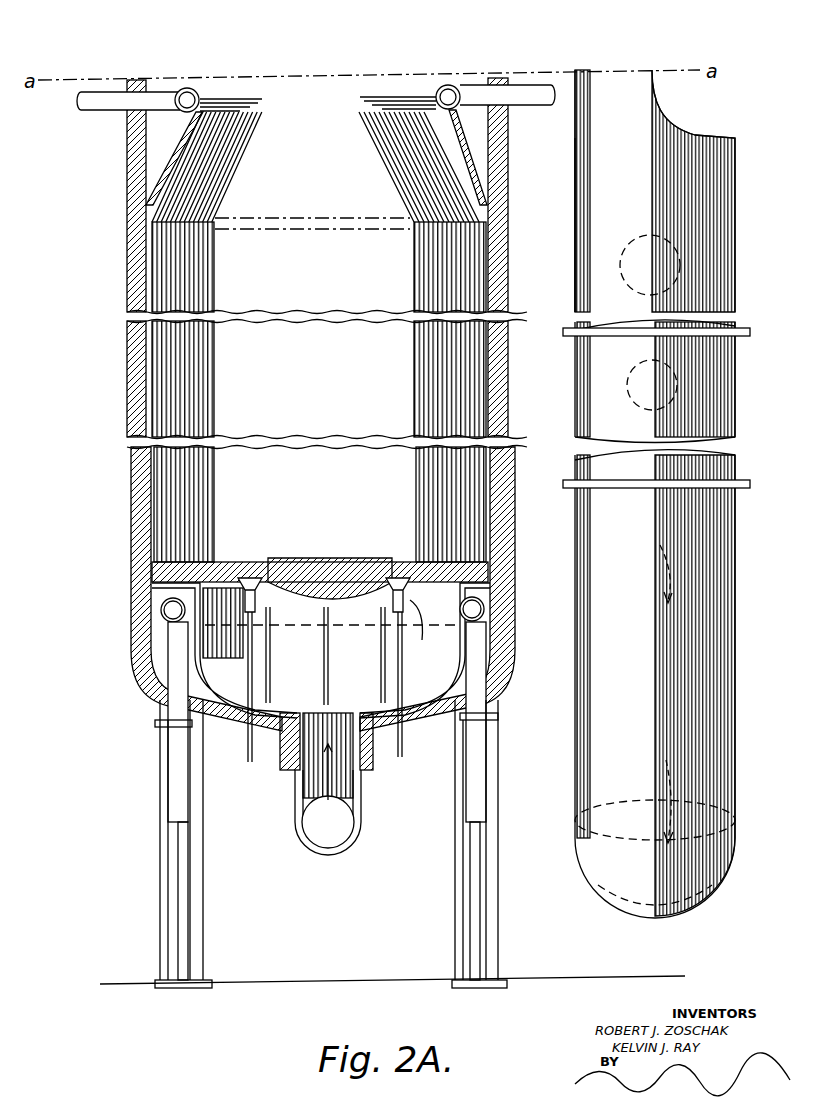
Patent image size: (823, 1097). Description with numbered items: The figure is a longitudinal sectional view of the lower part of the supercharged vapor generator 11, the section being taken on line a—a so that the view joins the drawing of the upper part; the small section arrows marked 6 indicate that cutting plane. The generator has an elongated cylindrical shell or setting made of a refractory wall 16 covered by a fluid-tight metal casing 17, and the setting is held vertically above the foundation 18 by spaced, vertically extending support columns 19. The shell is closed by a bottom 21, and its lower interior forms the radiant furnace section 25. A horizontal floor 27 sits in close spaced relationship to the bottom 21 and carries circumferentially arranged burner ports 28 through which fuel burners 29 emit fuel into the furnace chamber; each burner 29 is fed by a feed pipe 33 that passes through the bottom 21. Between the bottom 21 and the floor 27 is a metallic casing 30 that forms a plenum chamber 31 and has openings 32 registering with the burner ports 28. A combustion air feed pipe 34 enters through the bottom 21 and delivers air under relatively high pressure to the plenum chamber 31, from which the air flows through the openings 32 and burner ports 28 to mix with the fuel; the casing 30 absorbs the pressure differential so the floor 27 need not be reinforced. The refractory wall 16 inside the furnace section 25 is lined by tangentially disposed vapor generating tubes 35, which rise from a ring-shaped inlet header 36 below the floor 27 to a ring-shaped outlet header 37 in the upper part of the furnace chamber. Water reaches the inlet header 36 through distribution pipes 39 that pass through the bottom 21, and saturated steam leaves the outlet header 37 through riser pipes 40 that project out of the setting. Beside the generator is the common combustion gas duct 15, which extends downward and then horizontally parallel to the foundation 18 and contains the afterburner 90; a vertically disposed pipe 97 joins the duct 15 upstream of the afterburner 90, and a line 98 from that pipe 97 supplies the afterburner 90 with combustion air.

The section line 6-6 indicator 6 is at (61, 70).
The supercharged vapor generator 11 is at (108, 296).
The combustion gas duct 15 is at (572, 237).
The refractory wall 16 is at (508, 278).
The fluid-tight metal casing 17 is at (510, 334).
The foundation 18 is at (353, 971).
The support columns 19 is at (158, 882).
The bottom 21 is at (247, 722).
The radiant furnace section 25 is at (312, 297).
The horizontal floor 27 is at (336, 565).
The burner ports 28 is at (263, 578).
The fuel burners 29 is at (250, 578).
The metallic casing 30 is at (470, 648).
The plenum chamber 31 is at (330, 633).
The openings 32 is at (422, 631).
The feed pipe 33 is at (326, 638).
The combustion air feed pipe 34 is at (362, 801).
The vapor generating tubes 35 is at (203, 426).
The ring-shaped inlet header 36 is at (161, 612).
The ring-shaped outlet header 37 is at (440, 88).
The distribution pipes 39 is at (172, 771).
The riser pipes 40 is at (88, 111).
The afterburner 90 is at (752, 392).
The vertically disposed pipe 97 is at (651, 236).
The line 98 is at (652, 376).